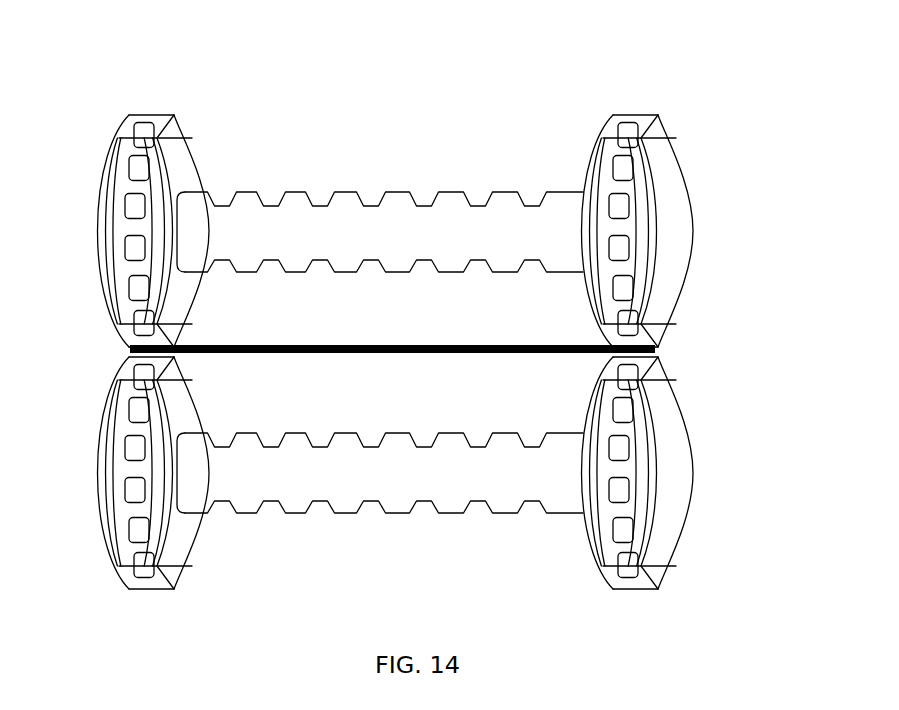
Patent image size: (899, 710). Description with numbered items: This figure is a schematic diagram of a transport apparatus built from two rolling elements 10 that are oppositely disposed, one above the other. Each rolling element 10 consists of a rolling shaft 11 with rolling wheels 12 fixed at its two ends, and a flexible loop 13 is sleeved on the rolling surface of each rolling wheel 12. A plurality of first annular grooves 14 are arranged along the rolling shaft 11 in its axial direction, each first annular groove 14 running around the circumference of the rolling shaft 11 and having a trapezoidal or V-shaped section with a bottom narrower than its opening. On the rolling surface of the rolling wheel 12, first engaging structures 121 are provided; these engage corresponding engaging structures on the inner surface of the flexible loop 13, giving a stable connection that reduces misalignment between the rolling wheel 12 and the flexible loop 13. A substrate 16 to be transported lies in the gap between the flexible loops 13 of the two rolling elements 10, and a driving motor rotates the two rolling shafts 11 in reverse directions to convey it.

The rolling element 10 is at (98, 253).
The rolling shaft 11 is at (380, 174).
The first annular groove 14 is at (371, 196).
The flexible loop 13 is at (677, 182).
The rolling wheel 12 is at (735, 214).
The first engaging structure 121 is at (717, 229).
The substrate 16 is at (270, 353).